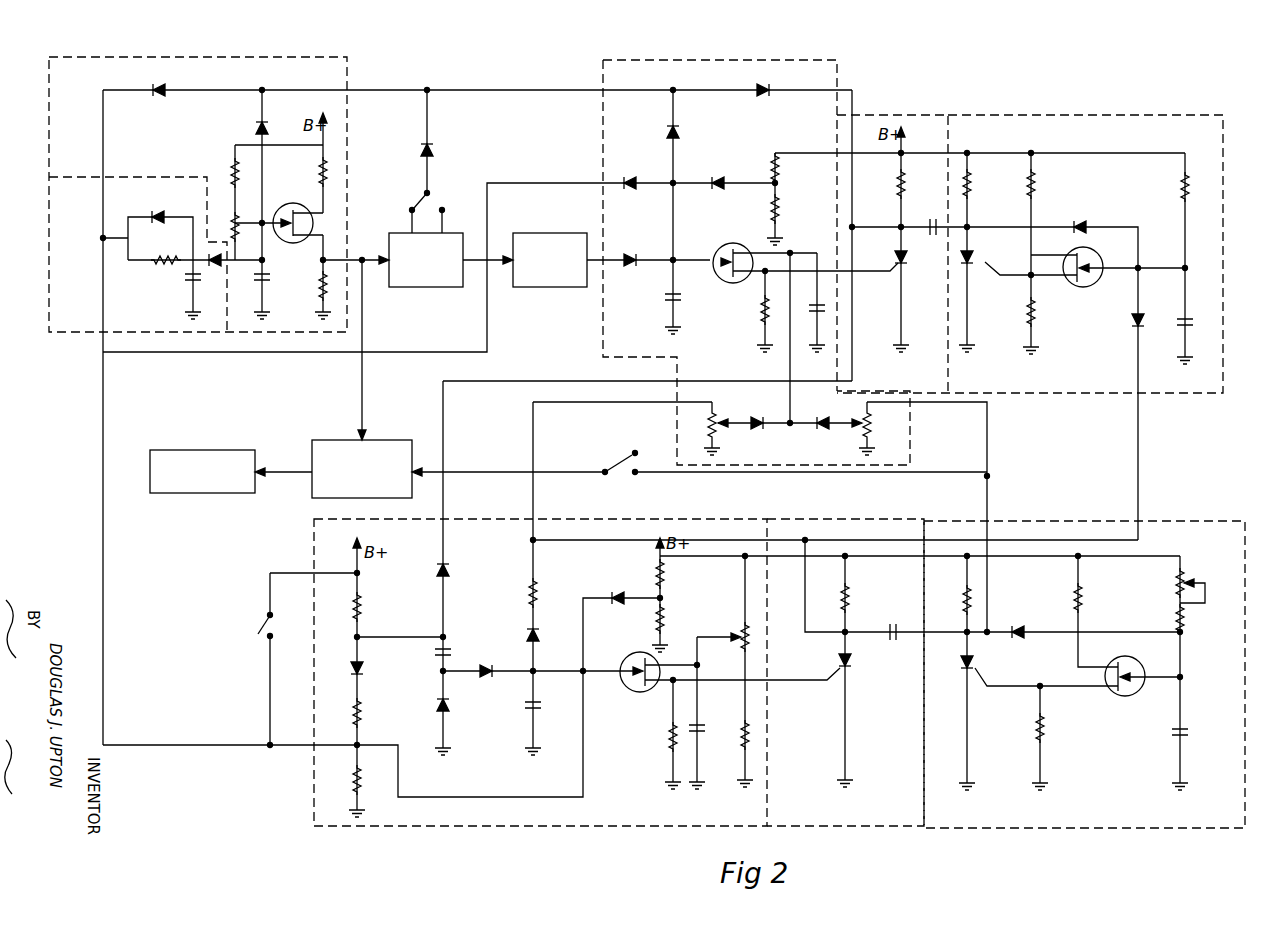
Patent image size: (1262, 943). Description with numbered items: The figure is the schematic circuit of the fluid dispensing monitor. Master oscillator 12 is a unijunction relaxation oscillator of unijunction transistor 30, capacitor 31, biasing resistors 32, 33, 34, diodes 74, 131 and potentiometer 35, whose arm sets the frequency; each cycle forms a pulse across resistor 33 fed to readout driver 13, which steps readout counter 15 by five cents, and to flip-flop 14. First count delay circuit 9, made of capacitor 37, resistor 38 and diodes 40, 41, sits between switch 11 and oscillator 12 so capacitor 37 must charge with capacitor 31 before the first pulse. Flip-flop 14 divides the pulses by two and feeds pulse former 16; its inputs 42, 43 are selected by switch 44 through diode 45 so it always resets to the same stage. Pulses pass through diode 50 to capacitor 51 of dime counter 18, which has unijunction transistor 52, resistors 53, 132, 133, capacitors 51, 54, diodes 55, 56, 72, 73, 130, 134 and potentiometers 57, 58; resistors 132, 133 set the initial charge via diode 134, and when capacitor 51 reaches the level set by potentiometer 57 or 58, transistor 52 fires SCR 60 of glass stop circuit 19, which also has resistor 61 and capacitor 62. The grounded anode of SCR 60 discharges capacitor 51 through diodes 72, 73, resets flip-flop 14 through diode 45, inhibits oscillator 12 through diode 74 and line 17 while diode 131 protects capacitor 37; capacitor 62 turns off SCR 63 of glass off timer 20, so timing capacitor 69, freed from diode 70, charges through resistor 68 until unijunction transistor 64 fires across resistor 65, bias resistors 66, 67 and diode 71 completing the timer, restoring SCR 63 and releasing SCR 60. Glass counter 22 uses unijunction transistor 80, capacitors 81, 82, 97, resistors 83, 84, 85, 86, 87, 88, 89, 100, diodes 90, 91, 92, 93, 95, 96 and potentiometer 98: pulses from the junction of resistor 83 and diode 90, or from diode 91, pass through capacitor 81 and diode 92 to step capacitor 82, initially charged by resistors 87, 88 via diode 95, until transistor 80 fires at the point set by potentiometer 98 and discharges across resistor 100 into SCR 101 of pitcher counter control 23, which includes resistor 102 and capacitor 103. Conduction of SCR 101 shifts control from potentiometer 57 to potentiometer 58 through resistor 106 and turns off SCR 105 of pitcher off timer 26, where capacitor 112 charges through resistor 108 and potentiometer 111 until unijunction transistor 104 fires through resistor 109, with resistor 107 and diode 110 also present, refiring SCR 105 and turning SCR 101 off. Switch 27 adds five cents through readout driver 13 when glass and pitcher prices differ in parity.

The first count delay circuit 9 is at (64, 297).
The switch 11 is at (257, 629).
The master oscillator 12 is at (252, 72).
The readout driver 13 is at (386, 443).
The flip-flop multivibrator 14 is at (414, 290).
The readout counter 15 is at (238, 450).
The pulse former 16 is at (552, 233).
The line 17 is at (505, 90).
The dime counter 18 is at (818, 73).
The glass stop circuit 19 is at (924, 124).
The glass off timer 20 is at (1144, 131).
The glass counter 22 is at (469, 534).
The pitcher counter control 23 is at (844, 534).
The pitcher off timer 26 is at (1168, 536).
The switch 27 is at (612, 468).
The unijunction transistor 30 is at (284, 240).
The capacitor 31 is at (258, 282).
The biasing resistor 32 is at (318, 173).
The resistor 33 is at (320, 288).
The biasing resistor 34 is at (230, 170).
The potentiometer 35 is at (234, 220).
The capacitor 37 is at (190, 278).
The resistor 38 is at (168, 255).
The diode 40 is at (162, 210).
The diode 41 is at (215, 268).
The first input 42 is at (408, 216).
The second input 43 is at (446, 215).
The switch 44 is at (412, 204).
The diode 45 is at (440, 150).
The diode 50 is at (632, 253).
The capacitor 51 is at (668, 300).
The unijunction transistor 52 is at (718, 246).
The resistor 53 is at (758, 317).
The capacitor 54 is at (830, 308).
The diode 55 is at (760, 430).
The diode 56 is at (825, 430).
The potentiometer 57 is at (720, 418).
The potentiometer 58 is at (873, 418).
The silicon controlled rectifier 60 is at (893, 258).
The resistor 61 is at (893, 186).
The capacitor 62 is at (933, 240).
The second silicon controlled rectifier 63 is at (978, 259).
The unijunction transistor 64 is at (1077, 286).
The bias resistor 65 is at (1022, 316).
The bias resistor 66 is at (1044, 186).
The bias resistor 67 is at (978, 181).
The bias resistor 68 is at (1178, 189).
The timing capacitor 69 is at (1188, 321).
The diode 70 is at (1089, 219).
The diode 71 is at (1130, 326).
The diode 72 is at (763, 100).
The diode 73 is at (685, 135).
The diode 74 is at (255, 128).
The unijunction transistor 80 is at (643, 694).
The capacitor 81 is at (456, 652).
The capacitor 82 is at (522, 711).
The resistor 83 is at (363, 608).
The resistor 84 is at (366, 713).
The resistor 85 is at (366, 781).
The resistor 86 is at (525, 597).
The resistor 87 is at (669, 576).
The resistor 88 is at (669, 619).
The resistor 89 is at (740, 741).
The diode 90 is at (366, 668).
The diode 91 is at (453, 570).
The diode 92 is at (486, 681).
The diode 93 is at (544, 635).
The diode 95 is at (618, 611).
The diode 96 is at (440, 716).
The capacitor 97 is at (705, 725).
The potentiometer 98 is at (740, 641).
The resistor 100 is at (670, 738).
The silicon controlled rectifier 101 is at (858, 661).
The resistor 102 is at (852, 596).
The capacitor 103 is at (895, 625).
The unijunction transistor 104 is at (1112, 696).
The silicon controlled rectifier 105 is at (958, 671).
The resistor 106 is at (960, 601).
The resistor 107 is at (1072, 599).
The resistor 108 is at (1175, 620).
The resistor 109 is at (1032, 739).
The diode 110 is at (1018, 645).
The potentiometer 111 is at (1175, 584).
The capacitor 112 is at (1192, 732).
The diode 130 is at (630, 191).
The diode 131 is at (157, 98).
The resistor 132 is at (783, 169).
The resistor 133 is at (783, 209).
The diode 134 is at (724, 180).